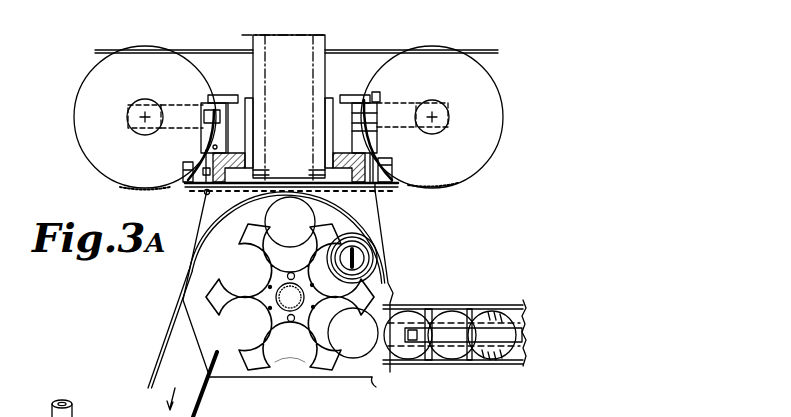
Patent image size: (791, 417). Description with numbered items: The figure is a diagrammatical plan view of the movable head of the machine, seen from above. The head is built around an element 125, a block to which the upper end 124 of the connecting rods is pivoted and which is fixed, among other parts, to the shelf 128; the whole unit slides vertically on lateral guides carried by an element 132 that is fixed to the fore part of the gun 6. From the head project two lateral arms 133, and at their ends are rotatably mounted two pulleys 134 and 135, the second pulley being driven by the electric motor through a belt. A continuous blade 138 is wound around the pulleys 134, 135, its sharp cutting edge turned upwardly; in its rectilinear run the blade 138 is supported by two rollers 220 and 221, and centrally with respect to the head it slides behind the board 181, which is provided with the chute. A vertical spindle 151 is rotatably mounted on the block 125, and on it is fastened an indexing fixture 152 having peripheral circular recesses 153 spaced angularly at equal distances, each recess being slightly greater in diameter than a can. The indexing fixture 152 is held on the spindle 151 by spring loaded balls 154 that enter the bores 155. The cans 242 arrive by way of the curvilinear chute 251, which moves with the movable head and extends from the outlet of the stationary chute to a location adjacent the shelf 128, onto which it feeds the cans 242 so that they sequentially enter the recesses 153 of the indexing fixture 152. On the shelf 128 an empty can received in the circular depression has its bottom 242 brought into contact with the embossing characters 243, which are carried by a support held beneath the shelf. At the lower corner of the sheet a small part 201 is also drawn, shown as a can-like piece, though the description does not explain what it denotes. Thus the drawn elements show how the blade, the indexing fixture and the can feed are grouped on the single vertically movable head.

The gun 6 is at (326, 44).
The upper end of the connecting rods 124 is at (391, 172).
The element 125 is at (378, 145).
The shelf 128 is at (364, 387).
The element 132 is at (333, 95).
The lateral arms 133 is at (172, 104).
The pulley 134 is at (130, 158).
The pulley 135 is at (466, 170).
The continuous blade 138 is at (418, 188).
The vertical spindle 151 is at (286, 312).
The indexing fixture 152 is at (252, 304).
The peripheral circular recesses 153 is at (291, 359).
The spring loaded balls 154 is at (290, 266).
The bores 155 is at (314, 286).
The board 181 is at (209, 194).
The can 201 is at (40, 408).
The roller 220 is at (195, 223).
The roller 221 is at (382, 204).
The cans 242 is at (298, 231).
The embossing characters 243 is at (356, 258).
The curvilinear chute 251 is at (453, 311).